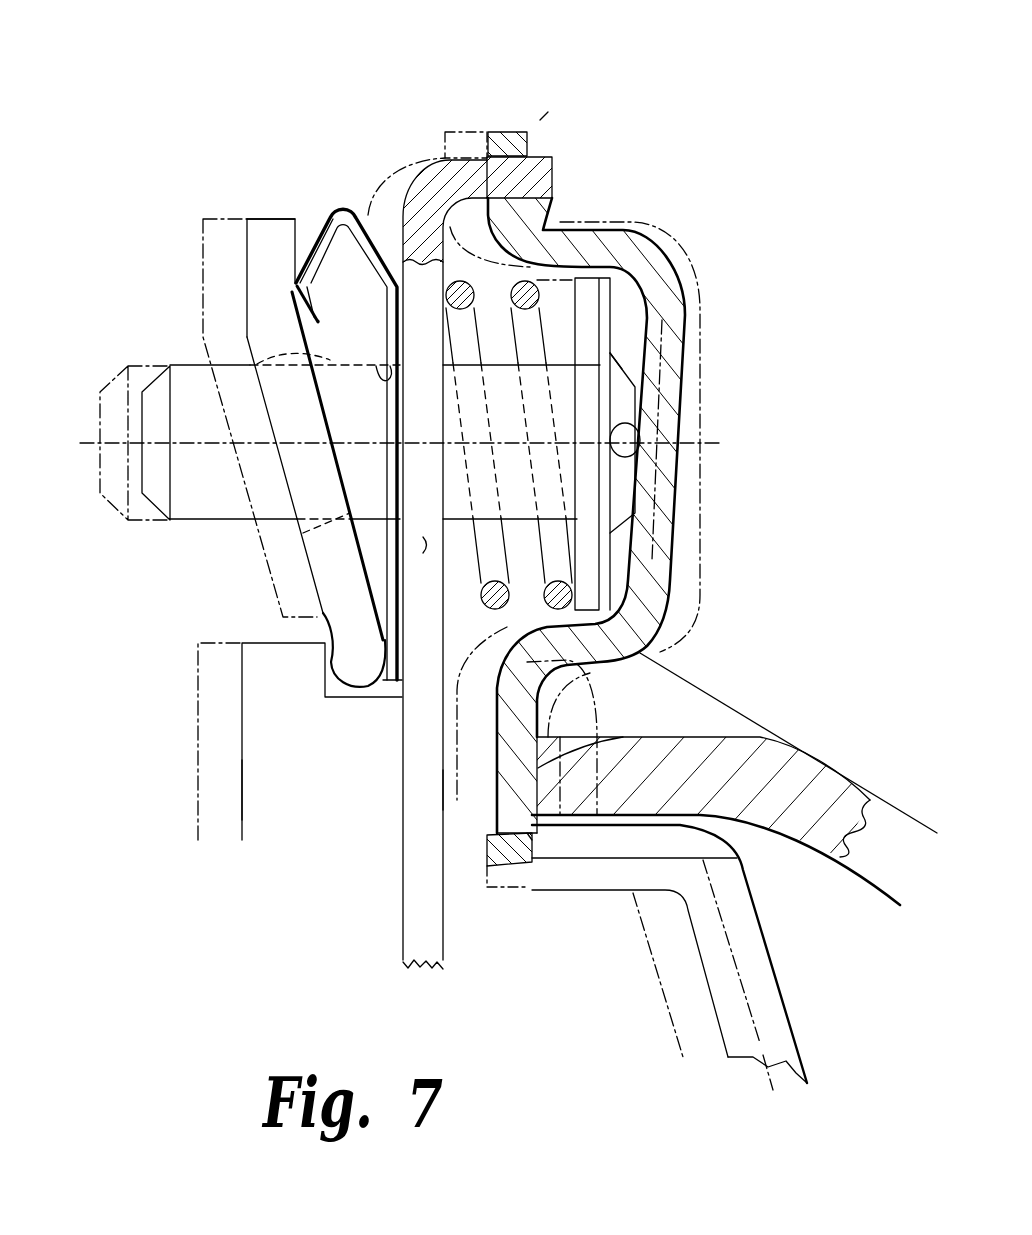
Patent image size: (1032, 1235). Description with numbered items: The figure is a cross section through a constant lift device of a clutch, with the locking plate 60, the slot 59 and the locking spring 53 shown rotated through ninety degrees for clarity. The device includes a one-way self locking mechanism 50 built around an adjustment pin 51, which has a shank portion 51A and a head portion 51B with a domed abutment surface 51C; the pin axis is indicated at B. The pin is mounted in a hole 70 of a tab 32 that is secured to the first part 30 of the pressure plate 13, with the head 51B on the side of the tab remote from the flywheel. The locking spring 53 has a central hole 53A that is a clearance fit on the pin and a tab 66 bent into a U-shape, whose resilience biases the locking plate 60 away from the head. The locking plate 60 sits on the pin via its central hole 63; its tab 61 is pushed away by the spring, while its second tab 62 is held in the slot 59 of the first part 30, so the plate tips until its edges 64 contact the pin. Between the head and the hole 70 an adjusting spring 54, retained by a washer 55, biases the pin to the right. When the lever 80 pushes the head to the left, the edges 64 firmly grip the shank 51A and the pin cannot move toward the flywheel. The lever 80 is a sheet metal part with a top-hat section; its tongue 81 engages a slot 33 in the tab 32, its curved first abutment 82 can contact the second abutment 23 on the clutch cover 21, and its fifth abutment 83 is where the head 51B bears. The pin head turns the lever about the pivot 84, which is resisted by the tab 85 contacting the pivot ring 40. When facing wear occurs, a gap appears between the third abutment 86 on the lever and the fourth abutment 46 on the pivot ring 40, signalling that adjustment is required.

The pressure plate 13 is at (240, 792).
The clutch cover 21 is at (810, 778).
The second abutment 23 is at (446, 790).
The first part 30 is at (318, 850).
The tab 32 is at (408, 935).
The slot 33 is at (542, 150).
The pivot ring 40 is at (755, 954).
The fourth abutment 46 is at (532, 830).
The one-way self locking mechanism 50 is at (253, 130).
The adjustment pin 51 is at (187, 505).
The shank portion 51A is at (230, 507).
The head portion 51B is at (620, 404).
The domed abutment surface 51C is at (636, 383).
The locking spring 53 is at (343, 204).
The clip hook portion 53A is at (373, 368).
The adjusting spring 54 is at (525, 292).
The washer 55 is at (588, 308).
The slot 59 is at (372, 688).
The locking plate 60 is at (271, 218).
The tab 61 is at (262, 255).
The second tab 62 is at (338, 672).
The central hole 63 is at (377, 380).
The edges 64 is at (343, 515).
The tab 66 is at (316, 246).
The hole 70 is at (419, 566).
The lever 80 is at (675, 537).
The tongue 81 is at (503, 130).
The first abutment 82 is at (603, 730).
The fifth abutment 83 is at (642, 446).
The pivot 84 is at (546, 115).
The tab 85 is at (508, 862).
The third abutment 86 is at (528, 838).
The bolt axis B is at (389, 476).